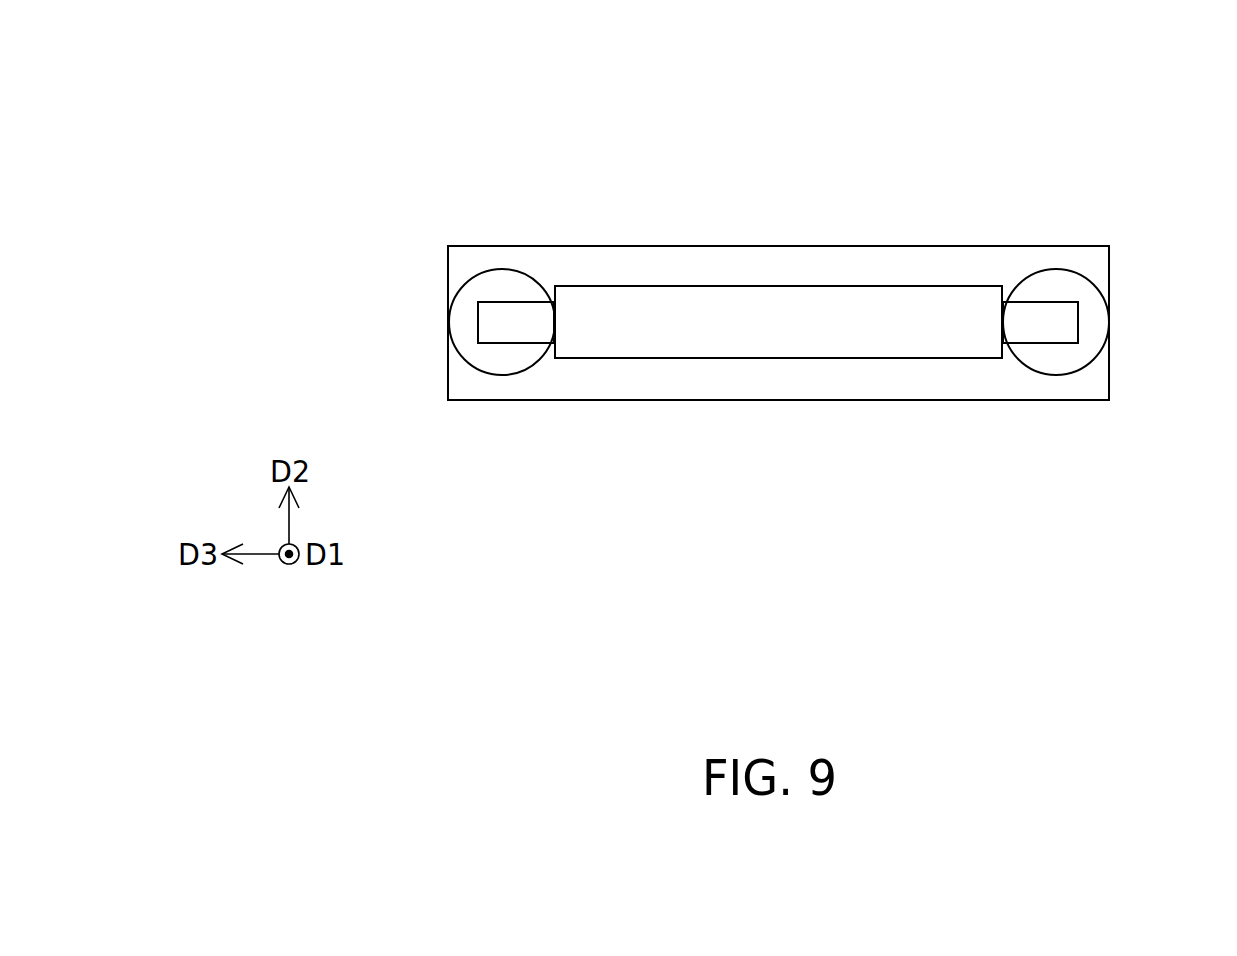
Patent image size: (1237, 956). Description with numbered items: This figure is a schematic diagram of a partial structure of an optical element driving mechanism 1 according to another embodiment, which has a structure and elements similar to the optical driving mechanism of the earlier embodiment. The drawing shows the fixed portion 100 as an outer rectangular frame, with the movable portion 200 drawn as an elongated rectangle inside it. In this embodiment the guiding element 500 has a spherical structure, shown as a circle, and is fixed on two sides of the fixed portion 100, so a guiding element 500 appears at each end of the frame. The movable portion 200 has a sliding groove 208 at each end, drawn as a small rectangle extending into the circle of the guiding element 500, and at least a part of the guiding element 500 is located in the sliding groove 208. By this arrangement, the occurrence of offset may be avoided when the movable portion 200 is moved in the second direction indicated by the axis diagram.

The optical element driving mechanism 1 is at (328, 108).
The fixed portion 100 is at (575, 400).
The movable portion 200 is at (778, 308).
The sliding groove 208 is at (513, 317).
The guiding element 500 is at (457, 323).